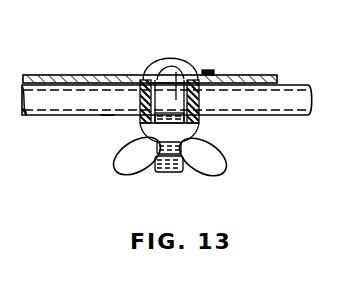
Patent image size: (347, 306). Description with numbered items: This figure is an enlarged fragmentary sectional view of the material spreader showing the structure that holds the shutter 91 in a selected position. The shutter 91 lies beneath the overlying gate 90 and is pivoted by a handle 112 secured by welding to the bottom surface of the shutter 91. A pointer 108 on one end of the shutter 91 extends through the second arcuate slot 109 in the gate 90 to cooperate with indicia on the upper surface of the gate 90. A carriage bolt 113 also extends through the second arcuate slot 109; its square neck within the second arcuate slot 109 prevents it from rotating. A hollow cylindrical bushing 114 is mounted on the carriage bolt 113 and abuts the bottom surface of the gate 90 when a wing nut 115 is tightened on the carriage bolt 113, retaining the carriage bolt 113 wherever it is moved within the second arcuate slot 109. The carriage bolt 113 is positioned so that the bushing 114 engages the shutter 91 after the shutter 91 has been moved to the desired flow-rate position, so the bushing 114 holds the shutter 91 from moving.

The gate 90 is at (119, 66).
The shutter 91 is at (89, 92).
The pointer 108 is at (213, 71).
The second arcuate slot 109 is at (168, 65).
The handle 112 is at (106, 116).
The carriage bolt 113 is at (176, 72).
The hollow cylindrical bushing 114 is at (202, 119).
The wing nut 115 is at (217, 178).